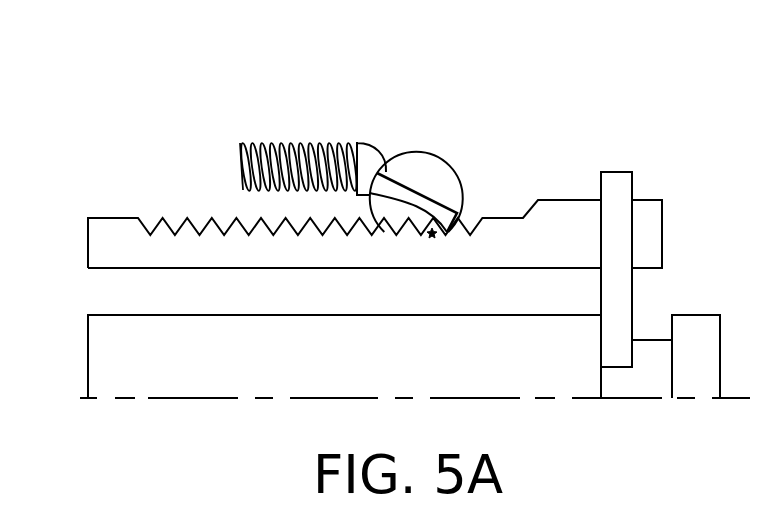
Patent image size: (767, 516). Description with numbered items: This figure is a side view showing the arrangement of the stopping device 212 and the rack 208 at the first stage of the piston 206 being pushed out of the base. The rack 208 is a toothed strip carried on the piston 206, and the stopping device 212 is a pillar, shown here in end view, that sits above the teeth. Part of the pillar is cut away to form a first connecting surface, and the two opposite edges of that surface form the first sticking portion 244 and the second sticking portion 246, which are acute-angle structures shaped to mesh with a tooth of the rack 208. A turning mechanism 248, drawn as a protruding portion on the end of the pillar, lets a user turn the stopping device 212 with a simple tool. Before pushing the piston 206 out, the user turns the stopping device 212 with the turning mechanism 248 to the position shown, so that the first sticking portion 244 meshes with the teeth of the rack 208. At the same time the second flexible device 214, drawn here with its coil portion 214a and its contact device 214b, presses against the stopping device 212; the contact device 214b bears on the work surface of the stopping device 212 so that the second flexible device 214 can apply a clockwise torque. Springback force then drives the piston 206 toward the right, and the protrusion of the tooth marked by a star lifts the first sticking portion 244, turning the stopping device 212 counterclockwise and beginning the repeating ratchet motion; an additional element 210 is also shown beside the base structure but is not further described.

The piston 206 is at (355, 365).
The rack 208 is at (568, 208).
The stop post 210 is at (625, 183).
The stopping device 212 is at (428, 152).
The second flexible device 214 is at (402, 63).
The spring 214a is at (265, 143).
The contact device 214b is at (366, 146).
The first sticking portion 244 is at (452, 226).
The second sticking portion 246 is at (358, 186).
The turning mechanism 248 is at (440, 174).